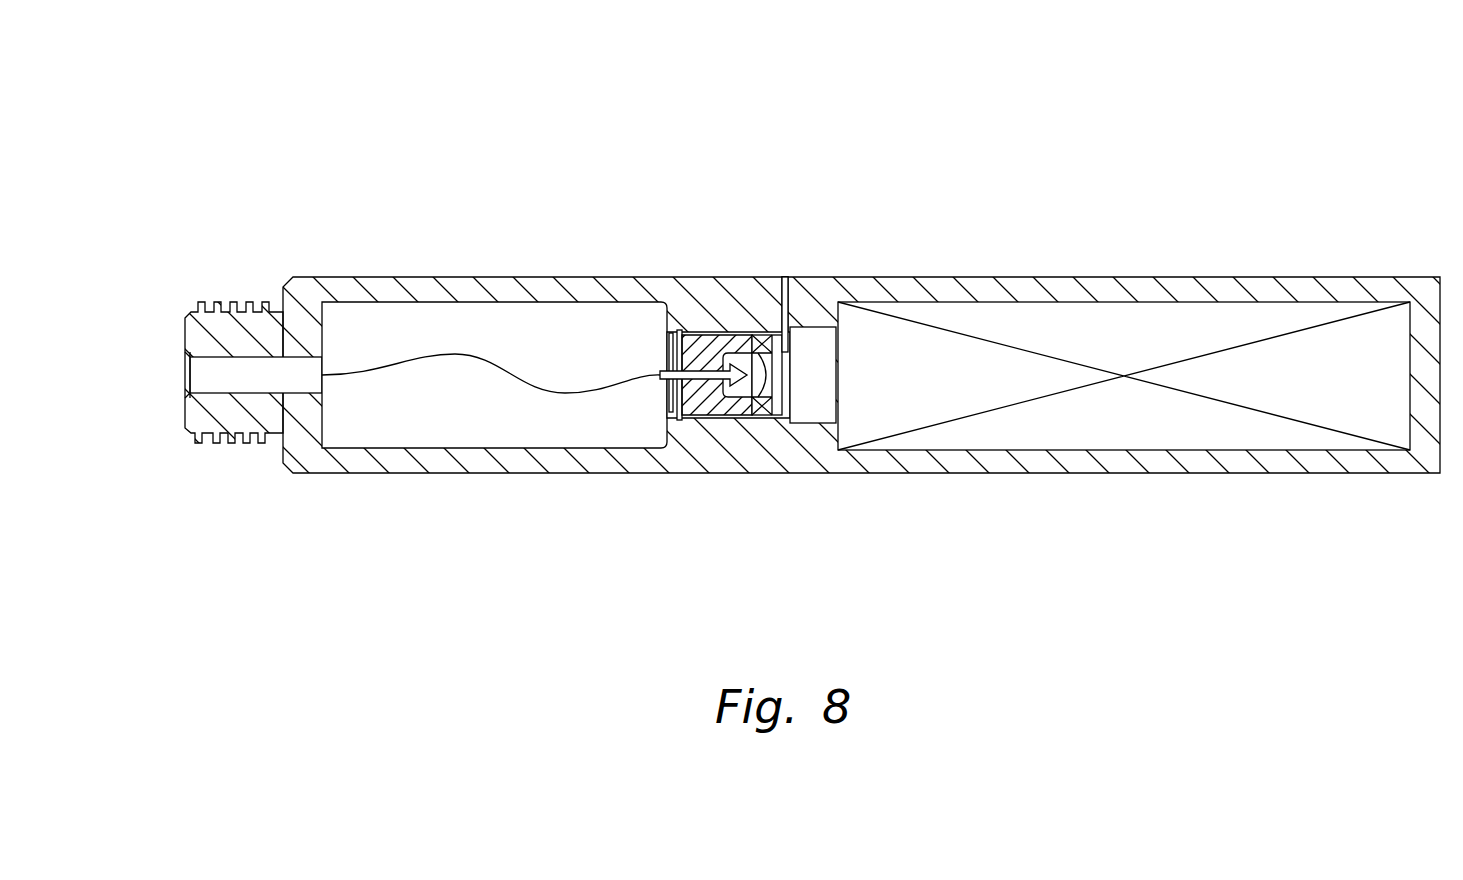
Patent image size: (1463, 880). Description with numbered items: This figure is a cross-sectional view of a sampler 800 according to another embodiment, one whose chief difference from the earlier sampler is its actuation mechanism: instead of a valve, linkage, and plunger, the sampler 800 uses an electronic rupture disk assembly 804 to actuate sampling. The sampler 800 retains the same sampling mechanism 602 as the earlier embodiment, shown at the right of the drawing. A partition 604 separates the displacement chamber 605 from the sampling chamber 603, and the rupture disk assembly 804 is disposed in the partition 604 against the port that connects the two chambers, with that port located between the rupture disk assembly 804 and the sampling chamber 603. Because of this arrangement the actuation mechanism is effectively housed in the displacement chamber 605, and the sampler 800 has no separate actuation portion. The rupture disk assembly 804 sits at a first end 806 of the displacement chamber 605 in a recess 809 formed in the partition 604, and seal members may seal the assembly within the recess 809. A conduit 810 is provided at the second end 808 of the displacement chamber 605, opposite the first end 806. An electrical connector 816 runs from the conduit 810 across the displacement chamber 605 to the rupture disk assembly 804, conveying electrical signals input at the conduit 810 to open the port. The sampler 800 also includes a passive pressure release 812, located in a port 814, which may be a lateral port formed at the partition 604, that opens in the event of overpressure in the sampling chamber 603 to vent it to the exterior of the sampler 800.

The sampler 800 is at (773, 311).
The second end 808 is at (283, 294).
The conduit 810 is at (185, 375).
The electrical connector 816 is at (441, 356).
The displacement chamber 605 is at (549, 327).
The first end 806 is at (665, 318).
The partition 604 is at (721, 277).
The port 814 is at (784, 306).
The passive pressure release 812 is at (786, 306).
The sampling chamber 603 is at (983, 300).
The sampling mechanism 602 is at (1126, 335).
The electronic rupture disk assembly 804 is at (705, 413).
The recess 809 is at (740, 413).